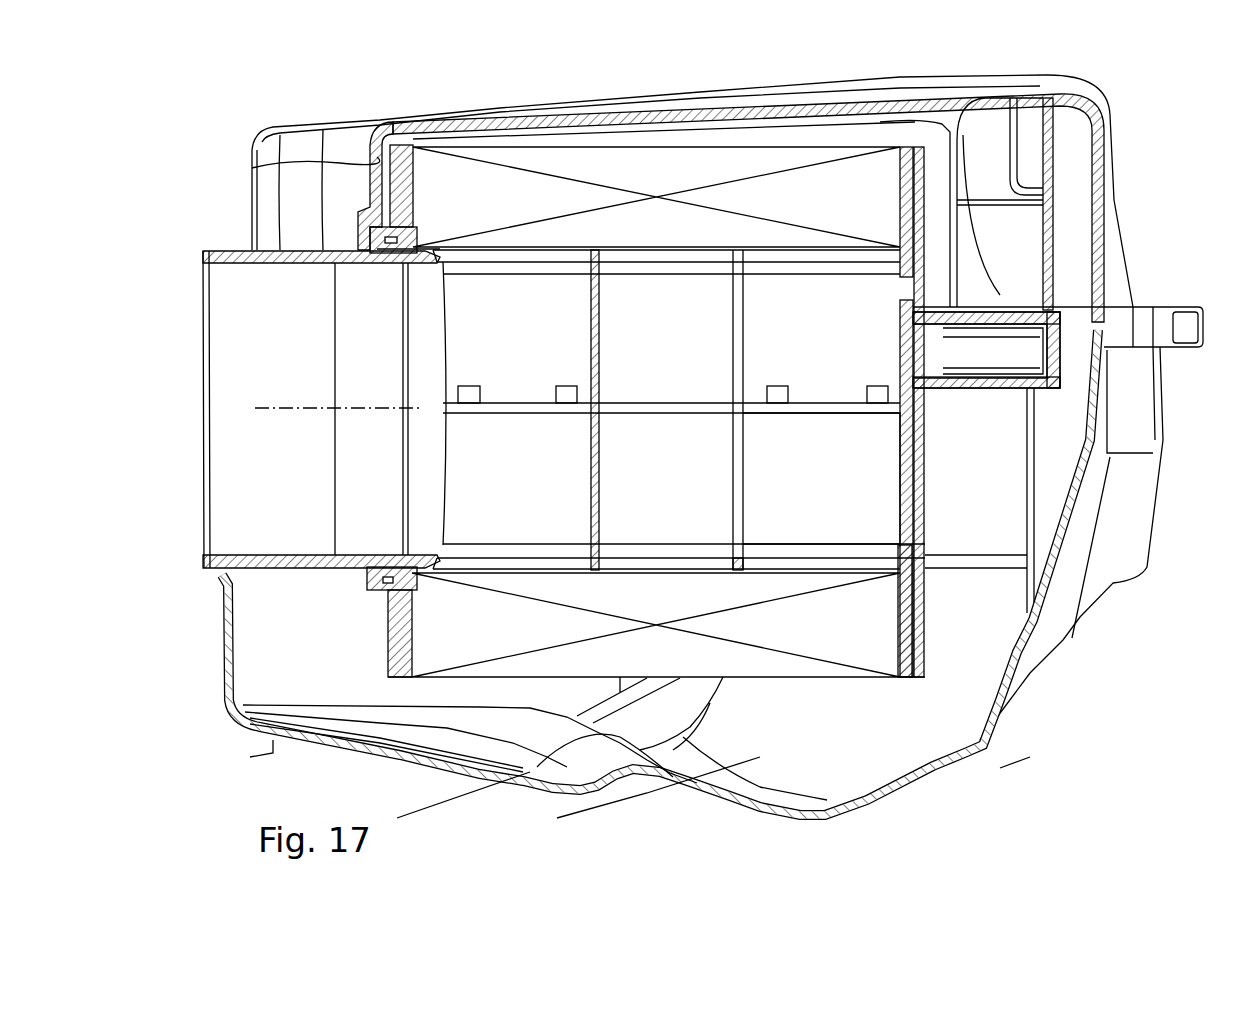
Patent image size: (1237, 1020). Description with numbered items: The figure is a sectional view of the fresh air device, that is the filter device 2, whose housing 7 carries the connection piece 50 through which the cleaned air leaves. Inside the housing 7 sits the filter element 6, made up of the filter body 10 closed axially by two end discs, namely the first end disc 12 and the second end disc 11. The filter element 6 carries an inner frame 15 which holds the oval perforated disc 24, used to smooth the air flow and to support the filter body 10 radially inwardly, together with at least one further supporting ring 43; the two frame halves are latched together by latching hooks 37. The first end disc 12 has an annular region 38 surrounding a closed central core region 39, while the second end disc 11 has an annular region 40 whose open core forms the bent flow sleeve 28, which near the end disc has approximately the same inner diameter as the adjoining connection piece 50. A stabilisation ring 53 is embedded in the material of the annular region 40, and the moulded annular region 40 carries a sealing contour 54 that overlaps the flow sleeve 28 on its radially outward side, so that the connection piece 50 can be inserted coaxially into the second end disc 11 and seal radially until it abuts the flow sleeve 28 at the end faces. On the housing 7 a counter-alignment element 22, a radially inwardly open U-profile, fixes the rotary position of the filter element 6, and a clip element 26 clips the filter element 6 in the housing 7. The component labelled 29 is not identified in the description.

The filter device 2 is at (584, 80).
The filter element 6 is at (836, 140).
The housing 7 is at (955, 775).
The filter body 10 is at (786, 160).
The second end disc 11 is at (416, 197).
The first end disc 12 is at (896, 196).
The inner frame 15 is at (814, 540).
The counter-alignment element 22 is at (1010, 338).
The perforated disc 24 is at (598, 335).
The clip element 26 is at (993, 390).
The flow sleeve 28 is at (443, 322).
The frame bar 29 is at (560, 272).
The latching hook 37 is at (478, 390).
The annular region 38 is at (900, 232).
The core region 39 is at (913, 285).
The annular region 40 is at (413, 620).
The further supporting ring 43 is at (740, 306).
The connection piece 50 is at (298, 562).
The stabilisation ring 53 is at (385, 583).
The sealing contour 54 is at (398, 275).